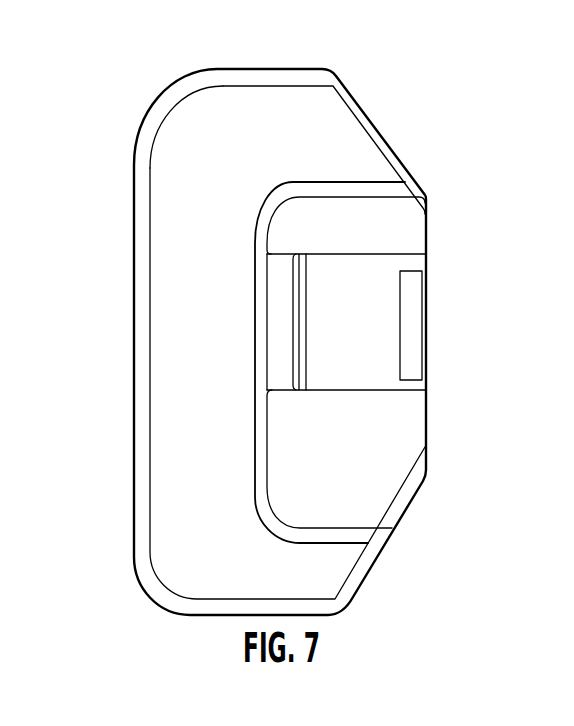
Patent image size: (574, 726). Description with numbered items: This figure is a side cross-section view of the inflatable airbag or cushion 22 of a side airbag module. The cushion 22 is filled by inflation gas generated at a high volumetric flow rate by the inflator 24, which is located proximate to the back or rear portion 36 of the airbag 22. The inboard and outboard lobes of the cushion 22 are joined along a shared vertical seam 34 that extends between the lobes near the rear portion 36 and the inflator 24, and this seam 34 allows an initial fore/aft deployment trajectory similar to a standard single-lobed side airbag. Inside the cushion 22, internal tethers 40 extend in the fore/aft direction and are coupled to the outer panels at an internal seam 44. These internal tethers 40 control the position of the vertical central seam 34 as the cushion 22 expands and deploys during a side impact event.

The inflatable airbag or cushion 22 is at (131, 77).
The inflator 24 is at (413, 380).
The shared vertical seam 34 is at (307, 182).
The rear portion 36 is at (458, 198).
The internal tethers 40 is at (347, 375).
The internal seam 44 is at (293, 300).